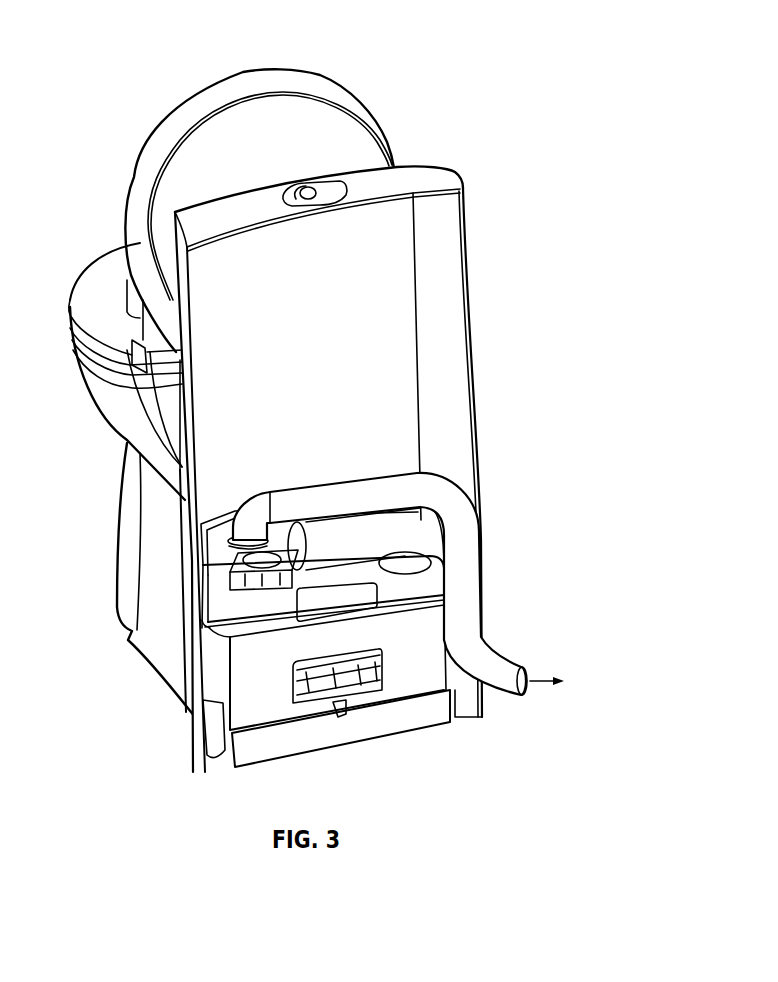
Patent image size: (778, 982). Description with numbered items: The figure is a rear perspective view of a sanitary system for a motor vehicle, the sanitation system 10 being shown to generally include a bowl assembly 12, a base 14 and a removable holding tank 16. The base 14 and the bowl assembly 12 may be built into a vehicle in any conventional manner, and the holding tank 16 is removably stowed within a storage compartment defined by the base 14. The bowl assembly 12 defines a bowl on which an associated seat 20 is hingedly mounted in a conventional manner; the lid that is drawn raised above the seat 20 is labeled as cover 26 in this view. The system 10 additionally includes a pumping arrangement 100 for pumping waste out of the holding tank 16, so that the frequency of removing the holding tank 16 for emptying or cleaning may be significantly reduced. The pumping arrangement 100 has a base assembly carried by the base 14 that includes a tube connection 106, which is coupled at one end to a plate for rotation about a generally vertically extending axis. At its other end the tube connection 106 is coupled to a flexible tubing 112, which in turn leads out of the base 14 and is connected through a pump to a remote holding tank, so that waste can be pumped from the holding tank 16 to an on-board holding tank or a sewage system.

The sanitation system 10 is at (116, 48).
The bowl assembly 12 is at (95, 368).
The base 14 is at (123, 570).
The removable holding tank 16 is at (253, 710).
The seat 20 is at (93, 285).
The lid 26 is at (138, 165).
The pumping arrangement 100 is at (500, 598).
The tube connection 106 is at (315, 498).
The flexible tubing 112 is at (483, 657).